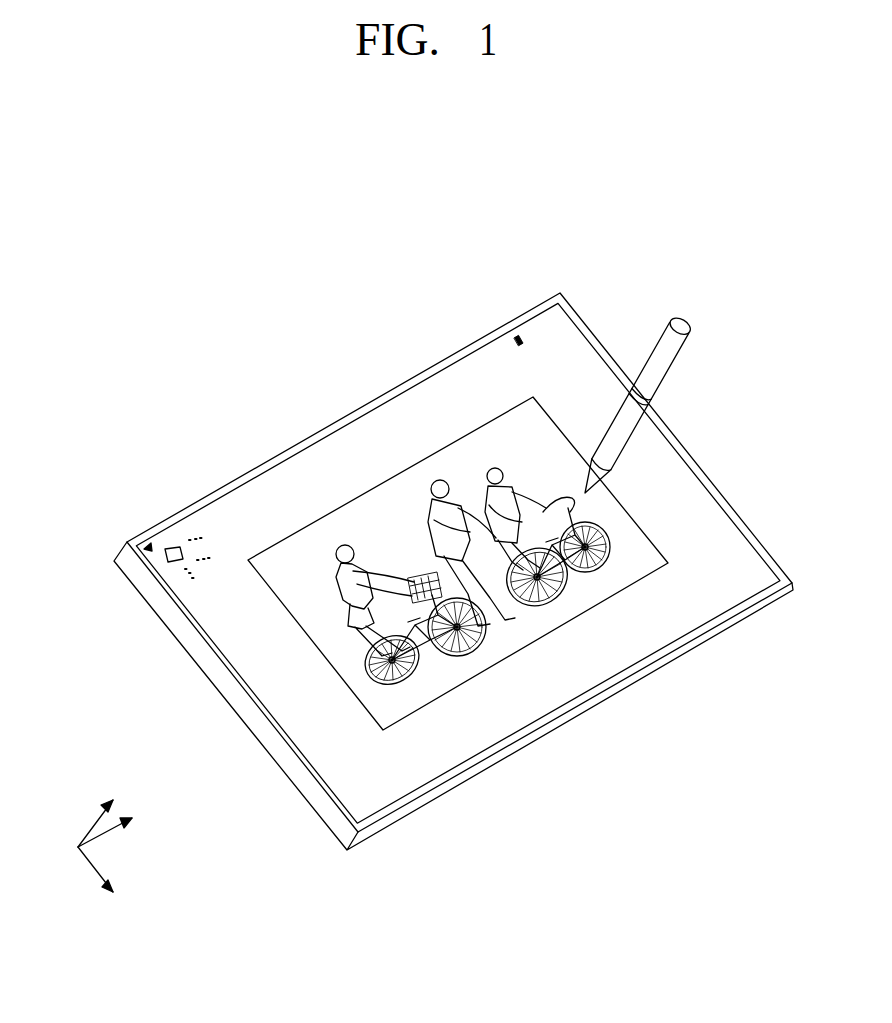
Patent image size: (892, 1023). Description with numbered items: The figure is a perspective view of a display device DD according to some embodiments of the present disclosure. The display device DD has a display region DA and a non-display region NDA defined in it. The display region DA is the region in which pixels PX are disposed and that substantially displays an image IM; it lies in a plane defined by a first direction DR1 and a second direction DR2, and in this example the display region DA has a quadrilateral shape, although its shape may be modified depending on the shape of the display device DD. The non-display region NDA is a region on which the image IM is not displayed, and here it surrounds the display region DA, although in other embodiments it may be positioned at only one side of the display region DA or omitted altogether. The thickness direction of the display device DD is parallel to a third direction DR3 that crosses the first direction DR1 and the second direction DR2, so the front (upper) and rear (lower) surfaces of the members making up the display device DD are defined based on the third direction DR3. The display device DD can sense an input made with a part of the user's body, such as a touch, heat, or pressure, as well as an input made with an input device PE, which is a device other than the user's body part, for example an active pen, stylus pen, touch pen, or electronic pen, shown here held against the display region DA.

The display device DD is at (700, 202).
The non-display region NDA is at (342, 420).
The display region DA is at (290, 480).
The pixel PX is at (170, 544).
The image IM is at (647, 527).
The input device PE is at (683, 321).
The first direction DR1 is at (106, 886).
The second direction DR2 is at (126, 828).
The third direction DR3 is at (105, 809).